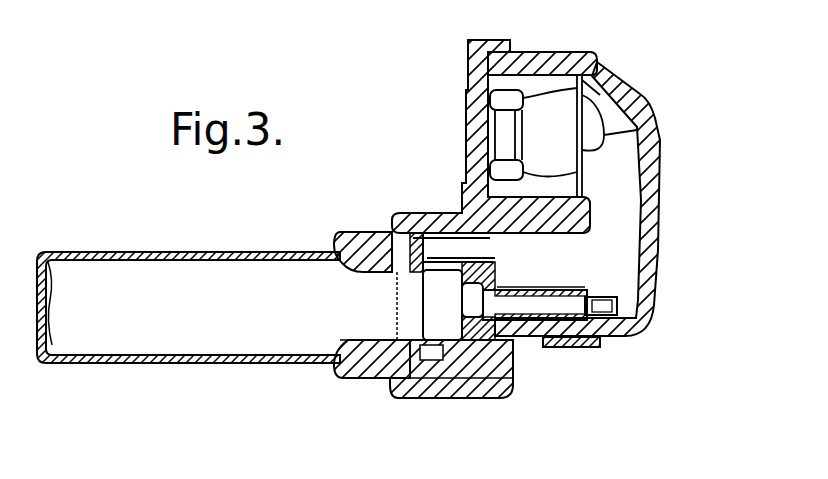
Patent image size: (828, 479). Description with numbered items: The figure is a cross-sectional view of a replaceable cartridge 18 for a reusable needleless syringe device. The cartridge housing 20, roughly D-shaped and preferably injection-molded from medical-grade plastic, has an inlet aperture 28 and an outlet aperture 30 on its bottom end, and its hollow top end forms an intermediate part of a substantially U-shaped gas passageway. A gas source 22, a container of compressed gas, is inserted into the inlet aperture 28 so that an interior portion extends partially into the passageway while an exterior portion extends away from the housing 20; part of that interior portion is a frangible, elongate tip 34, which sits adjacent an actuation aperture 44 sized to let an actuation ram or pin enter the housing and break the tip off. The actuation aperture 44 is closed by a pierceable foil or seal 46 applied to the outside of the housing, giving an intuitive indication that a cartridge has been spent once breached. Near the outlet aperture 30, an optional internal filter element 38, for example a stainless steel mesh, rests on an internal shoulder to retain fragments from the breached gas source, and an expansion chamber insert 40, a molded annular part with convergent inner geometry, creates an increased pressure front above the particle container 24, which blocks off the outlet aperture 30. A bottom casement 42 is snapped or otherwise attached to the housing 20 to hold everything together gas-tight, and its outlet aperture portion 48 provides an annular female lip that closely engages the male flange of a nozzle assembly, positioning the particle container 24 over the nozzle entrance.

The replaceable cartridge 18 is at (390, 404).
The cartridge housing 20 is at (660, 215).
The gas source 22 is at (303, 280).
The particle container 24 is at (503, 97).
The inlet aperture 28 is at (510, 378).
The outlet aperture 30 is at (490, 153).
The frangible elongate tip 34 is at (588, 300).
The internal filter element 38 is at (637, 127).
The expansion chamber insert 40 is at (600, 78).
The bottom casement 42 is at (360, 368).
The actuation aperture 44 is at (577, 348).
The pierceable foil or seal 46 is at (580, 345).
The outlet aperture portion 48 is at (466, 110).